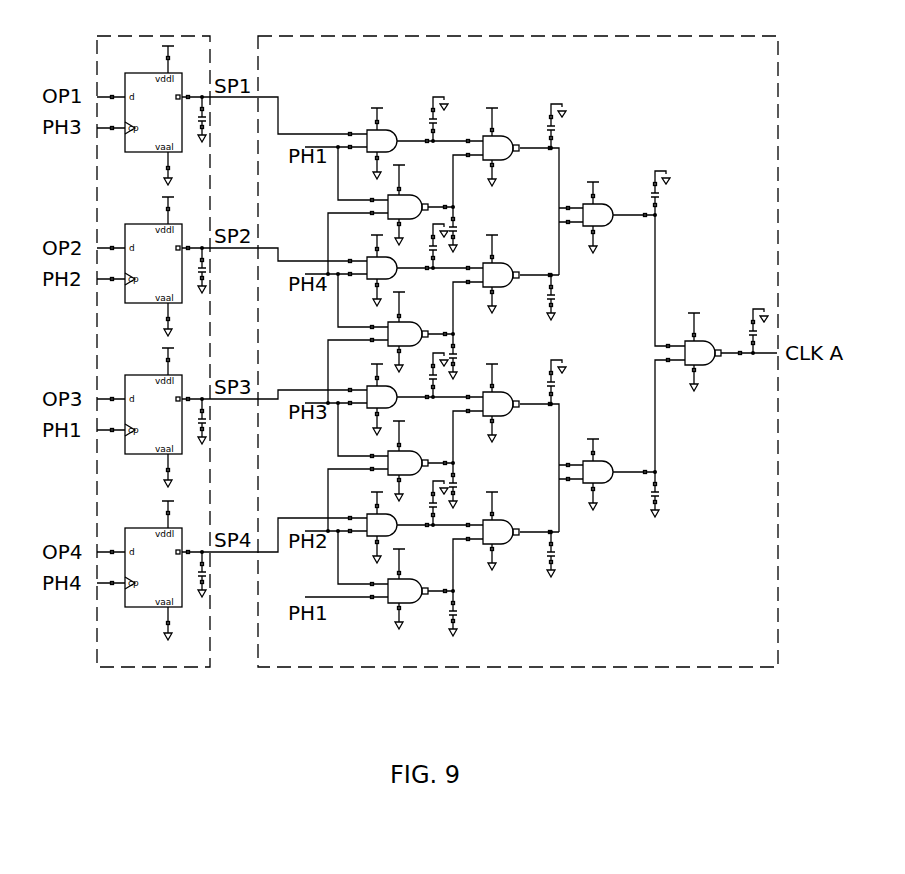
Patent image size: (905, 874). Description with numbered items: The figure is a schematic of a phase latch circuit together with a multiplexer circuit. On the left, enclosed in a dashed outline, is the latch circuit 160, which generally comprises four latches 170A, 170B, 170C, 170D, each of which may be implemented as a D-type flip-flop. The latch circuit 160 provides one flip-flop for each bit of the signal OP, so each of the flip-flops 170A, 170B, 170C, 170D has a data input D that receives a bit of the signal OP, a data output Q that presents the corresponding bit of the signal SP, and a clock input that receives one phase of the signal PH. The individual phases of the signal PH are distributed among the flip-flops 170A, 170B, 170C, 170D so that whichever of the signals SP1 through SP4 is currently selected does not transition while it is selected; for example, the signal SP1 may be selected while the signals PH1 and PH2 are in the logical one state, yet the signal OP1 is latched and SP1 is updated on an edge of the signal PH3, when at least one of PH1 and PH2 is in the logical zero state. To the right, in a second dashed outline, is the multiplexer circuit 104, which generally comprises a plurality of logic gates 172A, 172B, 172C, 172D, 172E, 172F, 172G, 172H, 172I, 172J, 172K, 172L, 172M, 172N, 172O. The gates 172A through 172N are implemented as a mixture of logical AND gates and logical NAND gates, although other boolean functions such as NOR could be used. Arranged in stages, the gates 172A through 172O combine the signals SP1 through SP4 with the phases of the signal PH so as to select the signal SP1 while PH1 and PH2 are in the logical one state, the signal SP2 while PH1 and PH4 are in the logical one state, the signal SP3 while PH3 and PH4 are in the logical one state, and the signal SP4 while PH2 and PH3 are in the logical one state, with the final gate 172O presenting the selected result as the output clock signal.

The latch circuit 160 is at (128, 35).
The multiplexer circuit 104 is at (290, 35).
The latch 170A is at (125, 90).
The latch 170B is at (125, 241).
The latch 170C is at (125, 392).
The latch 170D is at (125, 545).
The logic gate 172A is at (367, 152).
The logic gate 172B is at (367, 279).
The logic gate 172C is at (367, 408).
The logic gate 172D is at (367, 536).
The logic gate 172E is at (614, 224).
The logic gate 172F is at (614, 467).
The logic gate 172G is at (508, 159).
The logic gate 172H is at (408, 193).
The logic gate 172I is at (508, 286).
The logic gate 172J is at (408, 320).
The logic gate 172K is at (508, 415).
The logic gate 172L is at (408, 449).
The logic gate 172M is at (508, 543).
The logic gate 172N is at (408, 577).
The logic gate 172O is at (712, 365).